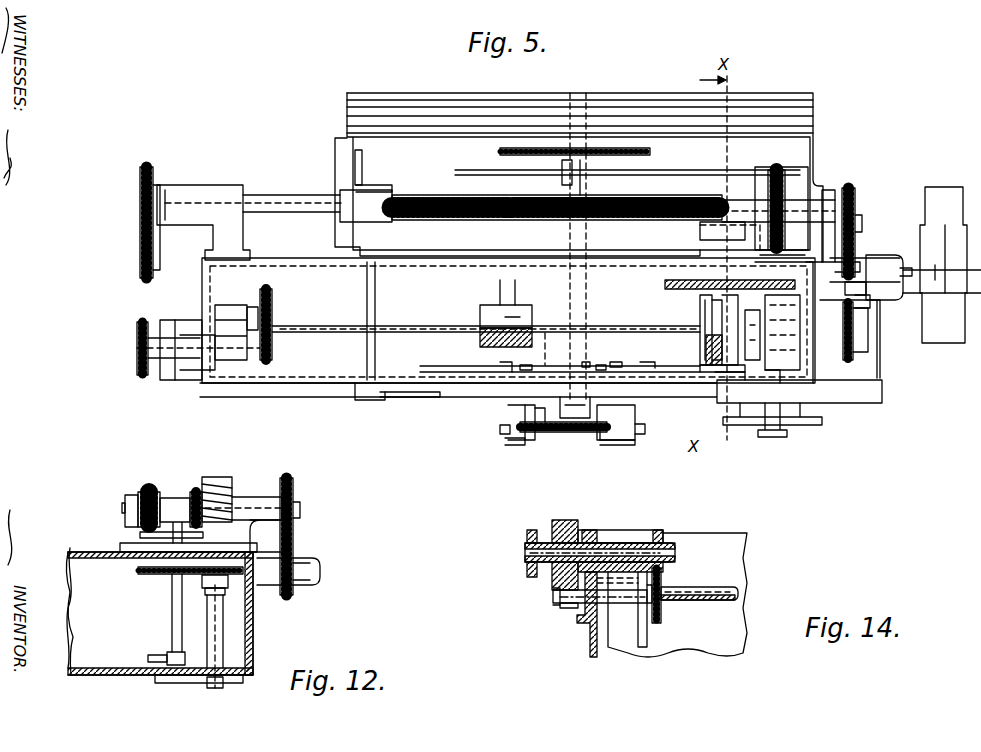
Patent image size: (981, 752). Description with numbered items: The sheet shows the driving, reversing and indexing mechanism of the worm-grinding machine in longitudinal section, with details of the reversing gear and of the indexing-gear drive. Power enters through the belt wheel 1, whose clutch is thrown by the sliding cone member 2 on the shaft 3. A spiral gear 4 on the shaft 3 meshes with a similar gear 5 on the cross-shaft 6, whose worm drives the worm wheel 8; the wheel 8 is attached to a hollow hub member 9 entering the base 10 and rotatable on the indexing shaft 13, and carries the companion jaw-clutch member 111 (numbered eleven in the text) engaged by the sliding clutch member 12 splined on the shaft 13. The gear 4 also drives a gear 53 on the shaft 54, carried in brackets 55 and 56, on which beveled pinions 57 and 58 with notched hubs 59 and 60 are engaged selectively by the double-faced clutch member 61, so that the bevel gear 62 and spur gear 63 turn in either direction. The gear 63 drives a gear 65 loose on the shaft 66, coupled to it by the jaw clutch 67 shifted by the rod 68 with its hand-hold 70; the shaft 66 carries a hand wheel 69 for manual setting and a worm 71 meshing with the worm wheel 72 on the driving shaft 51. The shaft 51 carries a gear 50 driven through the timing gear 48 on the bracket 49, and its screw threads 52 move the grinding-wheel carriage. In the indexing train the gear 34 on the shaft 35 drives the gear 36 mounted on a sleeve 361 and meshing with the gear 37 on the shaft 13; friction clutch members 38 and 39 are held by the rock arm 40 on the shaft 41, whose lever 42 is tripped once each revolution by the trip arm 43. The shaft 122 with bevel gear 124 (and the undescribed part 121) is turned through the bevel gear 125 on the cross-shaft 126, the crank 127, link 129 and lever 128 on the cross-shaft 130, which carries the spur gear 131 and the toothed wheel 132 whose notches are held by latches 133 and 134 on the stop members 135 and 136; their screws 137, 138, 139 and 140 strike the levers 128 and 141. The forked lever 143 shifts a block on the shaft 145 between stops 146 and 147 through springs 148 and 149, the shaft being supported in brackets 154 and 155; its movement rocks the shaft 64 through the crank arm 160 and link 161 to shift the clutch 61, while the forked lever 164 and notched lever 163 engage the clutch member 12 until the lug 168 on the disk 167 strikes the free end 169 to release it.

In FIG. 5, the belt wheel 1 is at (943, 265).
In FIG. 5, the sliding cone member 2 is at (875, 260).
In FIG. 5, the drive shaft 3 is at (906, 270).
In FIG. 12, the drive shaft 3 is at (306, 572).
In FIG. 5, the spiral gear 4 is at (852, 262).
In FIG. 12, the spiral gear 4 is at (296, 556).
In FIG. 5, the spiral gear 5 is at (876, 290).
In FIG. 5, the cross-shaft 6 is at (870, 302).
In FIG. 5, the worm wheel 8 is at (860, 330).
In FIG. 5, the hollow hub member 9 is at (862, 345).
In FIG. 5, the base 10 is at (541, 330).
In FIG. 12, the base 10 is at (252, 620).
In FIG. 14, the base 10 is at (677, 595).
In FIG. 5, the sliding clutch member 12 is at (732, 312).
In FIG. 5, the indexing shaft 13 is at (432, 326).
In FIG. 14, the indexing shaft 13 is at (715, 595).
In FIG. 5, the gear 34 is at (137, 326).
In FIG. 14, the gear 34 is at (528, 532).
In FIG. 5, the shaft 35 is at (137, 352).
In FIG. 14, the shaft 35 is at (527, 552).
In FIG. 5, the gear 36 is at (274, 343).
In FIG. 14, the gear 36 is at (660, 532).
In FIG. 5, the gear 37 is at (274, 297).
In FIG. 14, the gear 37 is at (662, 580).
In FIG. 14, the friction clutch member 38 is at (578, 522).
In FIG. 5, the friction clutch member 39 is at (166, 382).
In FIG. 14, the friction clutch member 39 is at (552, 570).
In FIG. 14, the rock arm 40 is at (563, 603).
In FIG. 5, the shaft 41 is at (236, 384).
In FIG. 14, the shaft 41 is at (553, 595).
In FIG. 14, the lever 42 is at (640, 605).
In FIG. 5, the trip arm 43 is at (252, 306).
In FIG. 14, the trip arm 43 is at (662, 605).
In FIG. 5, the timing gear 48 is at (140, 247).
In FIG. 5, the bracket 49 is at (165, 185).
In FIG. 5, the gear 50 is at (140, 186).
In FIG. 5, the driving shaft 51 is at (258, 205).
In FIG. 5, the screw threads 52 is at (425, 200).
In FIG. 5, the spiral gear 53 is at (856, 200).
In FIG. 12, the spiral gear 53 is at (296, 525).
In FIG. 5, the shaft 54 is at (858, 222).
In FIG. 12, the shaft 54 is at (296, 505).
In FIG. 5, the bracket 55 is at (826, 215).
In FIG. 12, the bracket 55 is at (254, 500).
In FIG. 12, the bracket 56 is at (122, 505).
In FIG. 12, the beveled pinion 57 is at (130, 495).
In FIG. 12, the beveled pinion 58 is at (250, 538).
In FIG. 12, the notched hub 59 is at (148, 492).
In FIG. 12, the notched hub 60 is at (195, 492).
In FIG. 12, the double-faced clutch member 61 is at (170, 498).
In FIG. 5, the bevel gear 62 is at (710, 205).
In FIG. 12, the bevel gear 62 is at (140, 535).
In FIG. 5, the spur gear 63 is at (690, 281).
In FIG. 12, the spur gear 63 is at (138, 571).
In FIG. 12, the rock-shaft 64 is at (175, 600).
In FIG. 12, the gear 65 is at (205, 583).
In FIG. 5, the shaft 66 is at (789, 322).
In FIG. 12, the shaft 66 is at (213, 646).
In FIG. 5, the jaw clutch 67 is at (752, 312).
In FIG. 12, the jaw clutch 67 is at (226, 578).
In FIG. 12, the rod 68 is at (218, 690).
In FIG. 5, the hand wheel 69 is at (815, 425).
In FIG. 5, the hand-hold 70 is at (778, 432).
In FIG. 5, the worm 71 is at (790, 195).
In FIG. 12, the worm 71 is at (232, 482).
In FIG. 5, the worm wheel 72 is at (778, 176).
In FIG. 5, the housing 111 is at (786, 329).
In FIG. 5, the collar 121 is at (562, 178).
In FIG. 5, the shaft 122 is at (480, 172).
In FIG. 5, the bevel gear 124 is at (362, 162).
In FIG. 5, the bevel gear 125 is at (385, 186).
In FIG. 5, the cross-shaft 126 is at (372, 298).
In FIG. 5, the crank 127 is at (356, 400).
In FIG. 5, the crank or lever 128 is at (520, 410).
In FIG. 5, the link 129 is at (418, 398).
In FIG. 5, the cross-shaft 130 is at (580, 186).
In FIG. 5, the spur gear 131 is at (650, 152).
In FIG. 5, the toothed wheel 132 is at (545, 432).
In FIG. 5, the latch member 133 is at (640, 428).
In FIG. 5, the latch member 134 is at (505, 430).
In FIG. 5, the stop member 135 is at (632, 438).
In FIG. 5, the stop member 136 is at (508, 438).
In FIG. 5, the adjustable contact screw 137 is at (622, 410).
In FIG. 5, the adjusting screw 138 is at (598, 441).
In FIG. 5, the adjustable contact screw 139 is at (528, 412).
In FIG. 5, the adjusting screw 140 is at (538, 435).
In FIG. 5, the lever 141 is at (585, 412).
In FIG. 5, the forked lever 143 is at (585, 362).
In FIG. 5, the shaft 145 is at (552, 362).
In FIG. 5, the stop 146 is at (615, 362).
In FIG. 5, the stop 147 is at (500, 345).
In FIG. 5, the coiled spring 148 is at (535, 358).
In FIG. 5, the coiled spring 149 is at (605, 358).
In FIG. 5, the bracket 154 is at (500, 363).
In FIG. 5, the bracket 155 is at (655, 360).
In FIG. 12, the crank arm 160 is at (168, 652).
In FIG. 12, the link 161 is at (150, 658).
In FIG. 5, the lever 163 is at (726, 372).
In FIG. 5, the forked lever 164 is at (705, 300).
In FIG. 5, the disk member 167 is at (703, 311).
In FIG. 5, the arm or lug 168 is at (705, 350).
In FIG. 5, the free end 169 is at (720, 398).
In FIG. 14, the sleeve 361 is at (635, 540).